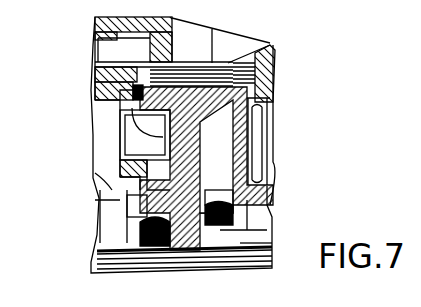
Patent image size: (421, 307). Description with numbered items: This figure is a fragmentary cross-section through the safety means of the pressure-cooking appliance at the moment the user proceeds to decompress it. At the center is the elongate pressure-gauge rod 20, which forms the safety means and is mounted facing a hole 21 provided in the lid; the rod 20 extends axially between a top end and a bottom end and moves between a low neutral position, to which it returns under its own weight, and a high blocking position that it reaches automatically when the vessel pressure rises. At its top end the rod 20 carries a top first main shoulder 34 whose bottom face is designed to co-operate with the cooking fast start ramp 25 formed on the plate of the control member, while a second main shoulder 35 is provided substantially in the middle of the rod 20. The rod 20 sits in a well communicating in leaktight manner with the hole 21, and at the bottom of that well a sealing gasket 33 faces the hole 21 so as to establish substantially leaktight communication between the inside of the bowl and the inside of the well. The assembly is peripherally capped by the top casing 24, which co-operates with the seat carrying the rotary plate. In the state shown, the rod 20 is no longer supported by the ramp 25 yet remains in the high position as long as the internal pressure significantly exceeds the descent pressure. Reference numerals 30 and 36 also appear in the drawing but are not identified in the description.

The pressure-gauge rod 20 is at (218, 30).
The hole 21 is at (133, 270).
The top casing 24 is at (276, 67).
The cooking fast start ramp 25 is at (125, 150).
The lower member 30 is at (262, 275).
The sealing gasket 33 is at (145, 221).
The top first main shoulder 34 is at (120, 112).
The second main shoulder 35 is at (130, 183).
The bottom plate 36 is at (197, 269).